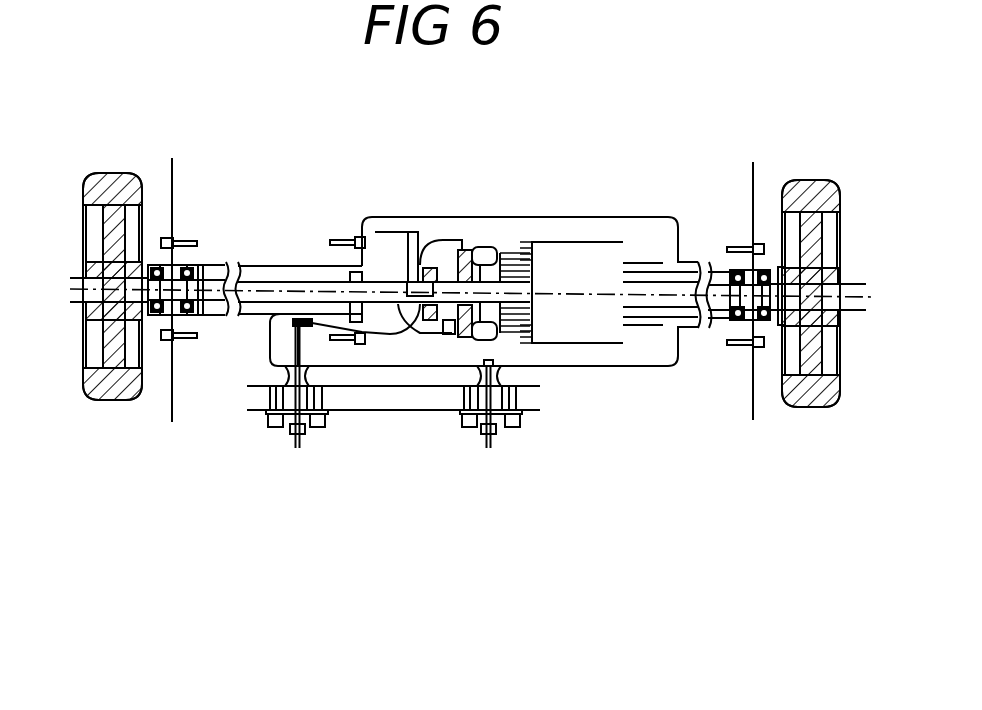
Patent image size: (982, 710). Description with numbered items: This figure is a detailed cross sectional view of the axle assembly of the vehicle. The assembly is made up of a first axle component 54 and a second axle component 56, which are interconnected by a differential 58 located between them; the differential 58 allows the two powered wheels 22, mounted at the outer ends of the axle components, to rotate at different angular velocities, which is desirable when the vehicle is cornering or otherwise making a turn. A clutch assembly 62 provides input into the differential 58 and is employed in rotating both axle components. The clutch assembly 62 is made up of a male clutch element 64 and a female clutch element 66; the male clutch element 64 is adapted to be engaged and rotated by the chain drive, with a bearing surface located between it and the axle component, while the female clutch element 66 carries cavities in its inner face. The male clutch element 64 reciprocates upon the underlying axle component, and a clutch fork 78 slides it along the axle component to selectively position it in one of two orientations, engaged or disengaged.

The powered wheels 22 is at (112, 398).
The first axle component 54 is at (277, 287).
The second axle component 56 is at (660, 283).
The differential 58 is at (582, 242).
The clutch assembly 62 is at (466, 210).
The male clutch element 64 is at (430, 218).
The female clutch element 66 is at (475, 235).
The clutch fork 78 is at (390, 327).